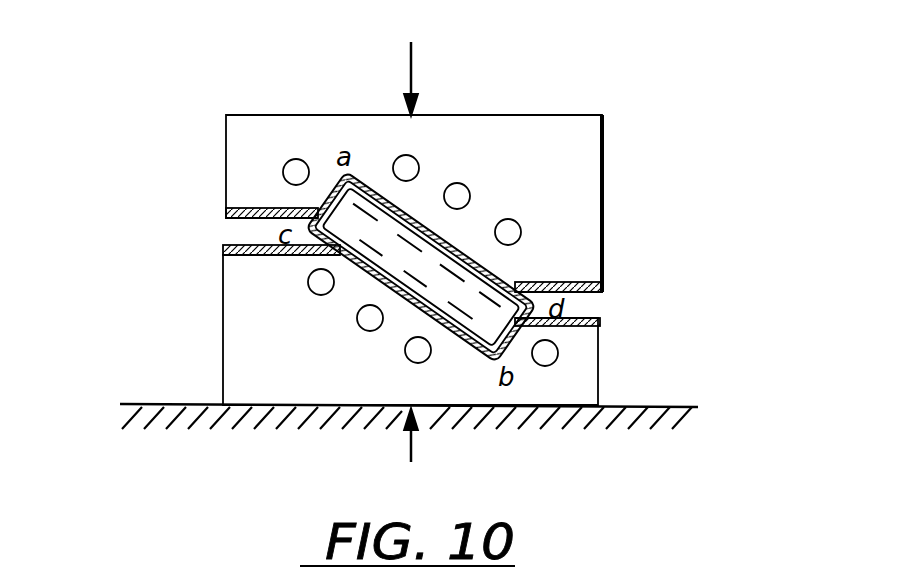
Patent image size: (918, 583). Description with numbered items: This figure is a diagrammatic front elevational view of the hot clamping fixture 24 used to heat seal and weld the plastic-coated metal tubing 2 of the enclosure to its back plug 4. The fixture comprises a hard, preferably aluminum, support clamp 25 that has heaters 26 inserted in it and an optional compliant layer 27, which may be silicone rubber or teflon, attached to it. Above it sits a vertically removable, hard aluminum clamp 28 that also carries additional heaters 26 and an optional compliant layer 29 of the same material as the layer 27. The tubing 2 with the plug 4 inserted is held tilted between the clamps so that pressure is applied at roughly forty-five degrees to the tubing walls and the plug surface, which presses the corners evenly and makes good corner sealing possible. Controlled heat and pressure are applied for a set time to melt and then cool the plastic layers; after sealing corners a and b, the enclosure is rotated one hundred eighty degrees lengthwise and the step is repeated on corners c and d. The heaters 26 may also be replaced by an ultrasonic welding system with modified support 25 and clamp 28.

The metal tubing 2 is at (513, 338).
The back plug 4 is at (417, 275).
The hot clamping fixture 24 is at (548, 478).
The support clamp 25 is at (223, 343).
The heaters 26 is at (521, 232).
The compliant layer 27 is at (368, 283).
The clamp 28 is at (543, 116).
The compliant layer 29 is at (410, 207).